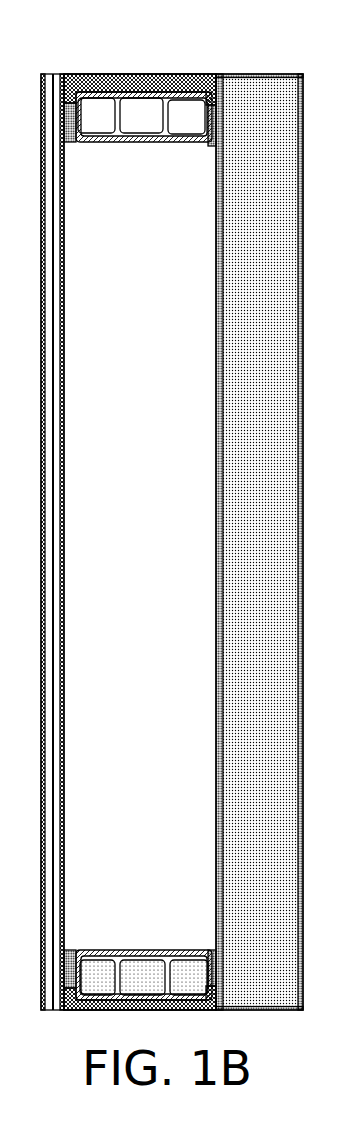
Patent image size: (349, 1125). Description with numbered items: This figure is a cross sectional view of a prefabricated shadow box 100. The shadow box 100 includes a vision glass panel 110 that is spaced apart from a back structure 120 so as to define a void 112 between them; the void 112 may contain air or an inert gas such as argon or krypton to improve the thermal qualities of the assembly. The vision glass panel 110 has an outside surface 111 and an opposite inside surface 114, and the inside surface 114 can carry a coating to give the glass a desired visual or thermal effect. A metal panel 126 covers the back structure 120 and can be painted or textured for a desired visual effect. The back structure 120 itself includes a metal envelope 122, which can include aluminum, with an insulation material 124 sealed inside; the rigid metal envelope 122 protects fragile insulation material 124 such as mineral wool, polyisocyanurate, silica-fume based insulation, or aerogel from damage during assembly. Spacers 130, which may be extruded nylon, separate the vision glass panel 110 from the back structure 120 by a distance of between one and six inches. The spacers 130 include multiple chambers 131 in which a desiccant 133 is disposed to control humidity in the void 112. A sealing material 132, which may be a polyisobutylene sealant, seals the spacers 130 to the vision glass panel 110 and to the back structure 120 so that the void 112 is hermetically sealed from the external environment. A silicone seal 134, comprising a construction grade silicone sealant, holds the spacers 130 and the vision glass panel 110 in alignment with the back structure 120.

The prefabricated shadow box 100 is at (36, 55).
The vision glass panel 110 is at (51, 542).
The outside (#1) surface 111 is at (41, 570).
The void 112 is at (150, 459).
The inside (#2) surface 114 is at (65, 573).
The back structure 120 is at (256, 525).
The metal envelope 122 is at (303, 575).
The insulation material 124 is at (276, 601).
The metal panel 126 is at (216, 630).
The spacers 130 is at (140, 96).
The chambers 131 is at (110, 128).
The sealing material 132 is at (67, 141).
The desiccant 133 is at (155, 988).
The silicone seal 134 is at (138, 82).